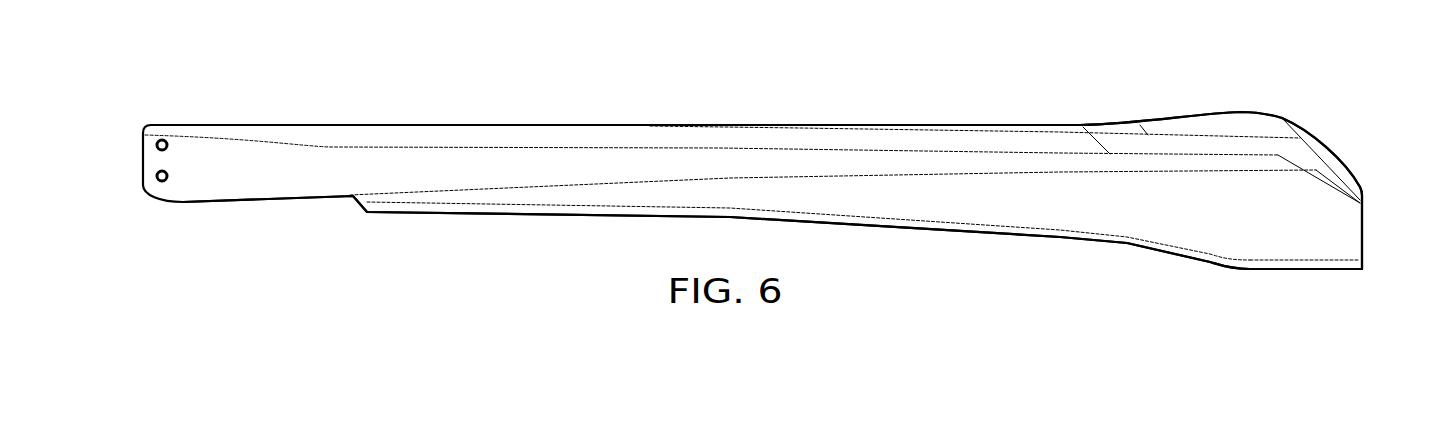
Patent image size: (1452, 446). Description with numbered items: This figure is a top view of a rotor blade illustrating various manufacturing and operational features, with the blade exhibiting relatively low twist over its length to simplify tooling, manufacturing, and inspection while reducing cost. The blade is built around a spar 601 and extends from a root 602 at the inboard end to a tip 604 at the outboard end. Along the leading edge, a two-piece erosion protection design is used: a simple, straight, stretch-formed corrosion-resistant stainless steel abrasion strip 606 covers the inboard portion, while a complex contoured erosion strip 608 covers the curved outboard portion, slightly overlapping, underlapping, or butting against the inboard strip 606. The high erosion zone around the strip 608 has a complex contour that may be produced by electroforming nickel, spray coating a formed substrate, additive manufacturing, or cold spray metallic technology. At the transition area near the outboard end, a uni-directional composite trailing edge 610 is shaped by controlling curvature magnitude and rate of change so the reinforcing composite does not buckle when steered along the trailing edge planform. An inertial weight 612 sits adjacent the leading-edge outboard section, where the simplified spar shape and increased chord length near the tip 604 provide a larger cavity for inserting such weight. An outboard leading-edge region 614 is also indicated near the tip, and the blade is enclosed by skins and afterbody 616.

The spar 601 is at (231, 182).
The root 602 is at (143, 163).
The tip 604 is at (1364, 238).
The abrasion strip 606 is at (493, 125).
The erosion strip 608 is at (1110, 153).
The uni-directional composite trailing edge 610 is at (1100, 233).
The inertial weight 612 is at (1242, 120).
The beveled edge 614 is at (1323, 152).
The skins and afterbody 616 is at (1280, 245).